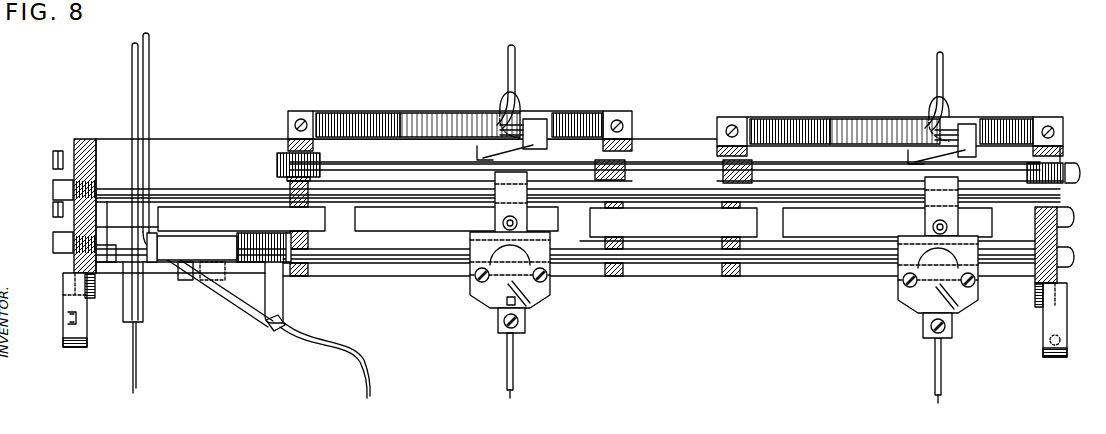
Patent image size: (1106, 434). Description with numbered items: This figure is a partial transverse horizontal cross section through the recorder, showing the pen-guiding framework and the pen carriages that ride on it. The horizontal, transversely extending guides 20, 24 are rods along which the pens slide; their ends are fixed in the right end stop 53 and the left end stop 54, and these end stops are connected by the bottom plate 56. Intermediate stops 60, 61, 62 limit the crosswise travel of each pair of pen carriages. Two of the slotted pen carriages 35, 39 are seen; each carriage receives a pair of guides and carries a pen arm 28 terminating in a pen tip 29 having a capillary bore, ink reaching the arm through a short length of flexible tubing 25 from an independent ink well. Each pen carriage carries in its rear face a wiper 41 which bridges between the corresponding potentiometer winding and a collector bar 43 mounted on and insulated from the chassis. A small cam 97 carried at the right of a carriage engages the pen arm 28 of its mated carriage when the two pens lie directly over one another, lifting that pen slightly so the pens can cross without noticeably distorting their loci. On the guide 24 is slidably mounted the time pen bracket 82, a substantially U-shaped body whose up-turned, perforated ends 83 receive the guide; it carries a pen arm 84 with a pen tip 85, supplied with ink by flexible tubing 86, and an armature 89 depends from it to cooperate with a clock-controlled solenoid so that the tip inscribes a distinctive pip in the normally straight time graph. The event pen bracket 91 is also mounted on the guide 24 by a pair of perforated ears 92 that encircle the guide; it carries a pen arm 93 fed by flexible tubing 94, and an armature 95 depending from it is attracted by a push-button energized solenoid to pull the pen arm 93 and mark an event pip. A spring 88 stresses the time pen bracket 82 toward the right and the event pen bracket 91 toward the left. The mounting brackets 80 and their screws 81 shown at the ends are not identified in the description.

The guide 20 is at (683, 188).
The guide 24 is at (690, 266).
The flexible tubing 25 is at (516, 53).
The pen arm 28 is at (515, 360).
The pen tip 29 is at (516, 397).
The pen carriage 35 is at (480, 296).
The pen carriage 39 is at (912, 306).
The wiper 41 is at (538, 117).
The collector bar 43 is at (406, 162).
The right end stop 53 is at (1040, 225).
The left end stop 54 is at (85, 214).
The bottom plate 56 is at (229, 146).
The intermediate stop 60 is at (300, 236).
The intermediate stop 61 is at (616, 233).
The intermediate stop 62 is at (727, 233).
The mounting bracket 80 is at (67, 308).
The bracket screw 81 is at (88, 318).
The time pen bracket 82 is at (191, 235).
The up-turned perforated ends 83 is at (158, 235).
The pen arm 84 is at (283, 297).
The pen tip 85 is at (361, 356).
The flexible tubing 86 is at (135, 74).
The spring 88 is at (258, 236).
The armature 89 is at (178, 276).
The event pen bracket 91 is at (108, 233).
The perforated ears 92 is at (102, 247).
The pen arm 93 is at (138, 355).
The flexible tubing 94 is at (150, 74).
The armature 95 is at (224, 276).
The cam 97 is at (505, 306).